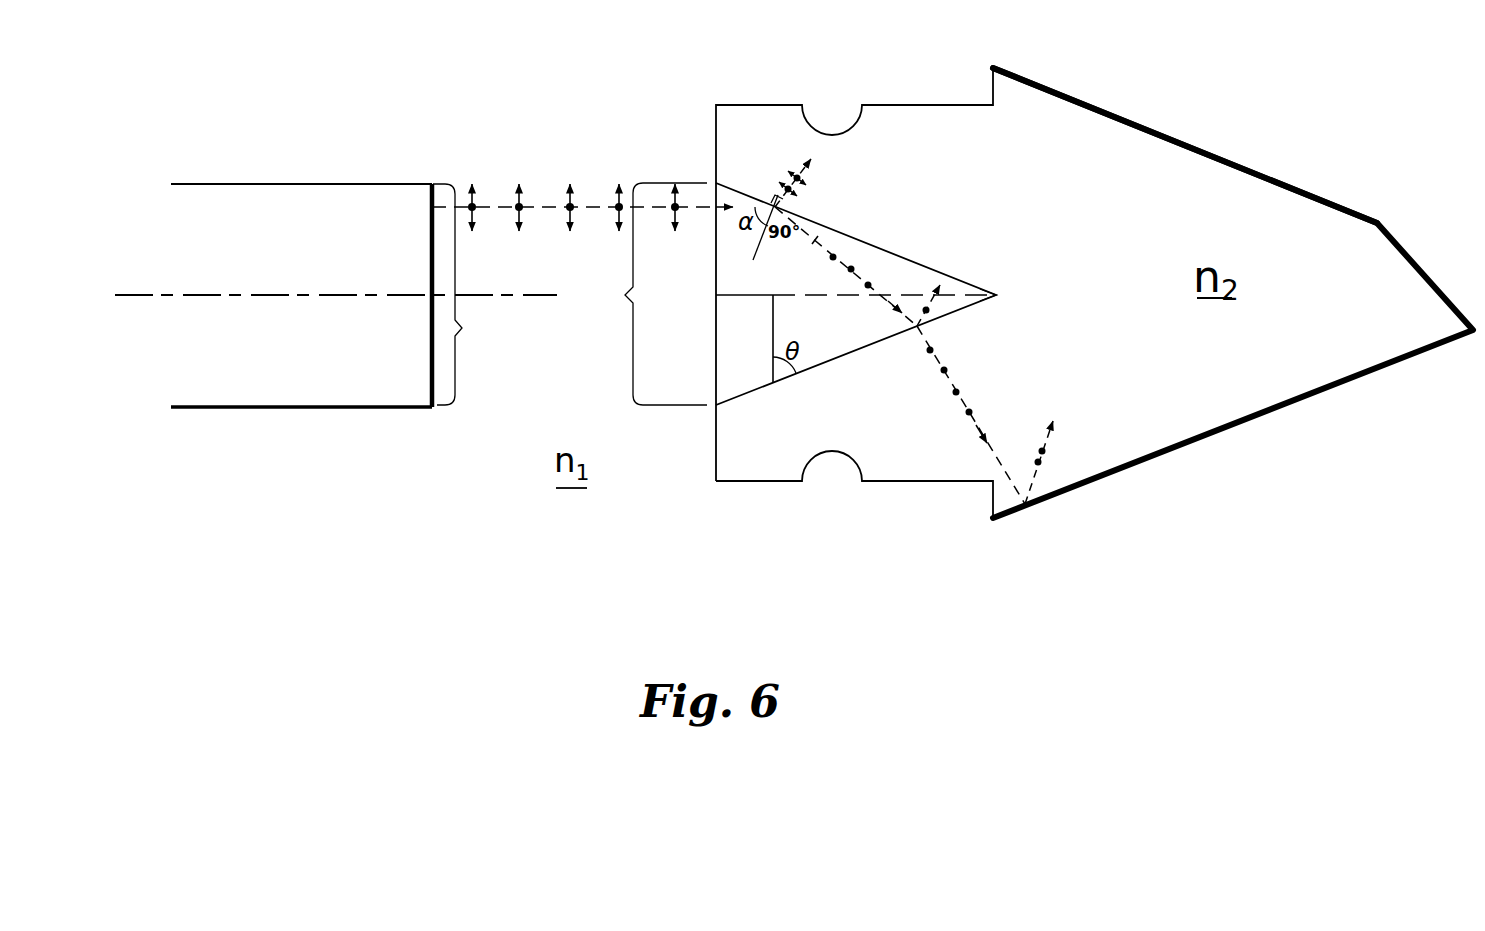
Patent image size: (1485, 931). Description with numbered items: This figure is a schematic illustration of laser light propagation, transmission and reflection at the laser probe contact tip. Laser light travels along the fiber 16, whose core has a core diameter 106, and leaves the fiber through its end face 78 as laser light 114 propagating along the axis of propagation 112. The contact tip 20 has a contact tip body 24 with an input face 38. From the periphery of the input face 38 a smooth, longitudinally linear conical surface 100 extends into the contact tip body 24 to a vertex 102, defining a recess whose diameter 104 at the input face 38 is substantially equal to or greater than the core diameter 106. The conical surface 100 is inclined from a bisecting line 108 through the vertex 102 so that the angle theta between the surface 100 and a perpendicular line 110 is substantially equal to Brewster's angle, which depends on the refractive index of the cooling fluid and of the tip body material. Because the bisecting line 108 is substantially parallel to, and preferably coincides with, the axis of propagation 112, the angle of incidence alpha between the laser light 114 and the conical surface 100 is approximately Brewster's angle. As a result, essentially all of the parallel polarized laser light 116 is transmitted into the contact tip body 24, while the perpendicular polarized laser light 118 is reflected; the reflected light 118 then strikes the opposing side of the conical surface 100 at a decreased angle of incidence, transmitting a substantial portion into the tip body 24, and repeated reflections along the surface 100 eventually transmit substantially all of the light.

The fiber 16 is at (197, 184).
The housing / probe tip body 20 is at (1106, 92).
The contact tip body 24 is at (1170, 175).
The input face 38 is at (716, 120).
The fiber end face 78 is at (433, 197).
The conical surface 100 is at (746, 392).
The vertex 102 is at (1000, 296).
The diameter 104 is at (643, 294).
The core diameter 106 is at (471, 294).
The bisecting line 108 is at (740, 294).
The perpendicular line 110 is at (772, 333).
The axis of propagation 112 is at (132, 293).
The laser light 114 is at (490, 202).
The parallel polarized laser light 116 is at (808, 174).
The perpendicular polarized laser light 118 is at (822, 232).